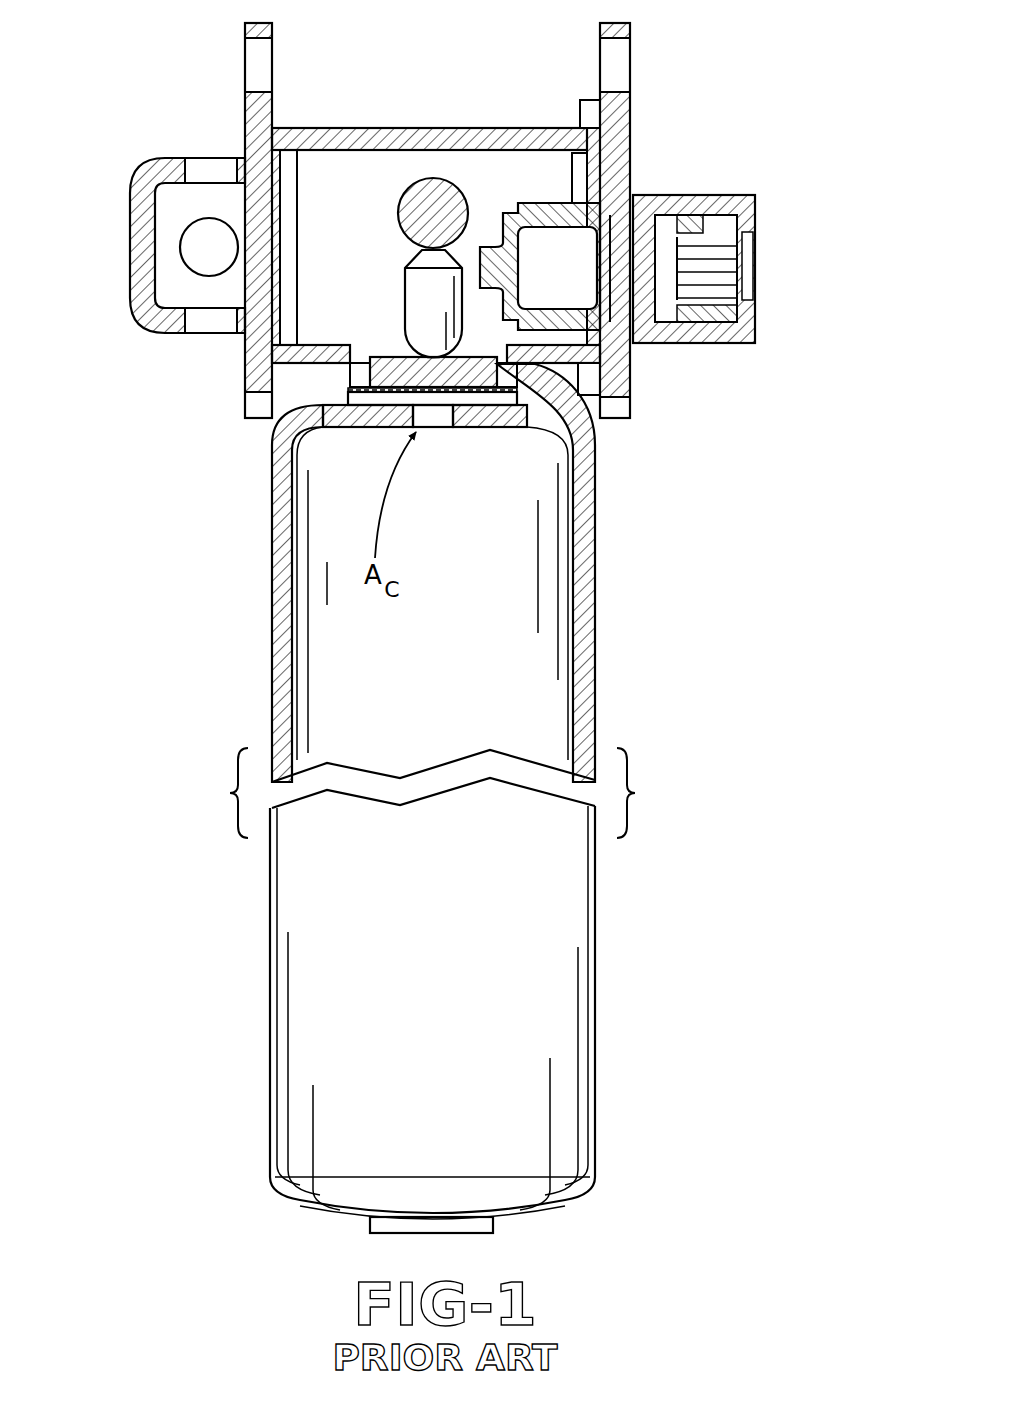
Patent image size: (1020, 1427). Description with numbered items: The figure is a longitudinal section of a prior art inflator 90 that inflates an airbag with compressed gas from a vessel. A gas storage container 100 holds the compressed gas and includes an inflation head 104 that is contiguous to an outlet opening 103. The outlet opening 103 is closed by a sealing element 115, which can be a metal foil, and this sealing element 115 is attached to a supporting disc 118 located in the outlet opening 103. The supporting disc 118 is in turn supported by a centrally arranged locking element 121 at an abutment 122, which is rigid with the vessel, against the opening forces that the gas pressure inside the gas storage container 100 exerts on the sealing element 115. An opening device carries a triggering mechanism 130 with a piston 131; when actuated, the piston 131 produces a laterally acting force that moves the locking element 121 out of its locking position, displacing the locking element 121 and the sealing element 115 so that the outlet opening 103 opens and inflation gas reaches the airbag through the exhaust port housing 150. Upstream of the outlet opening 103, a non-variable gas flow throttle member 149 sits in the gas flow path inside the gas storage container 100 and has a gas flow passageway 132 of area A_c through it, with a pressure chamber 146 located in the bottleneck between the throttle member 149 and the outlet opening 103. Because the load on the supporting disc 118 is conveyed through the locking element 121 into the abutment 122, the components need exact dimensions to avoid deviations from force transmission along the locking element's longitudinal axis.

The inflator 90 is at (627, 600).
The gas storage container 100 is at (413, 798).
The outlet opening 103 is at (495, 398).
The inflation head 104 is at (360, 140).
The sealing element 115 is at (378, 408).
The supporting disc 118 is at (390, 365).
The locking element 121 is at (410, 278).
The abutment 122 is at (432, 205).
The triggering mechanism 130 is at (690, 200).
The piston 131 is at (545, 215).
The gas flow passageway 132 is at (438, 417).
The pressure chamber 146 is at (465, 398).
The non-variable gas flow throttle member 149 is at (378, 422).
The exhaust port housing 150 is at (150, 178).